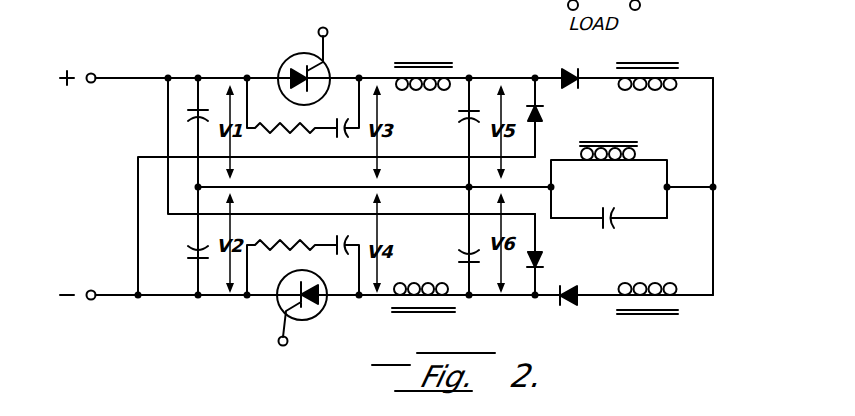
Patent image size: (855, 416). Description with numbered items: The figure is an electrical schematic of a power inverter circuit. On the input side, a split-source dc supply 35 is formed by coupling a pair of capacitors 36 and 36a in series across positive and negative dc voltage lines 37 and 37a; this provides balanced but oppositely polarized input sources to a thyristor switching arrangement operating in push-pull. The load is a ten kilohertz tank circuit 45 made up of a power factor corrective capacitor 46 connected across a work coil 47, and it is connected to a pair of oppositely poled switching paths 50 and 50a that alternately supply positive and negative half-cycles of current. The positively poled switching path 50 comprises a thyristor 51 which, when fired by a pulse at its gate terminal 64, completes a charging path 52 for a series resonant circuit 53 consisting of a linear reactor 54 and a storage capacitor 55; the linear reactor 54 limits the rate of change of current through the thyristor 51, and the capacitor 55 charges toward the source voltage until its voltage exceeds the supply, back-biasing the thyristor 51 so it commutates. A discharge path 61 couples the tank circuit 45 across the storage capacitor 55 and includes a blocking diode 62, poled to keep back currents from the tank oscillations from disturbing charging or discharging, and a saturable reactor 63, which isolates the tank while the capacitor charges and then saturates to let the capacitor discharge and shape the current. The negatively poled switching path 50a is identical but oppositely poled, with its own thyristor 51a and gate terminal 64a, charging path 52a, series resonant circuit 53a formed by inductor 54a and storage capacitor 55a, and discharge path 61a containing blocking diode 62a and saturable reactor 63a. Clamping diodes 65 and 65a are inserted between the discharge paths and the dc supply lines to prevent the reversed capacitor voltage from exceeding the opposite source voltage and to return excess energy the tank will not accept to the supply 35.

The split-source dc. supply 35 is at (375, 186).
The capacitor 36 is at (160, 107).
The capacitor 36a is at (142, 245).
The positive dc. voltage line 37 is at (126, 51).
The negative dc. voltage line 37a is at (108, 323).
The tank circuit 45 is at (609, 183).
The power factor corrective capacitor 46 is at (612, 230).
The work coil 47 is at (632, 135).
The positively poled switching path 50 is at (502, 46).
The negatively poled switching path 50a is at (512, 319).
The thyristor 51 is at (289, 60).
The thyristor 51a is at (321, 313).
The charging path 52 is at (364, 50).
The charging path 52a is at (348, 315).
The series resonant circuit 53 is at (423, 111).
The series resonant circuit 53a is at (430, 274).
The linear reactor 54 is at (423, 39).
The inductor 54a is at (423, 324).
The storage capacitor 55 is at (438, 132).
The storage capacitor 55a is at (441, 241).
The discharge path 61 is at (540, 58).
The discharge path 61a is at (582, 281).
The blocking diode 62 is at (589, 63).
The blocking diode 62a is at (594, 318).
The saturable reactor 63 is at (670, 59).
The saturable reactor 63a is at (667, 320).
The gate terminal 64 is at (352, 18).
The gate terminal 64a is at (245, 355).
The clamping diode 65 is at (557, 117).
The clamping diode 65a is at (570, 254).